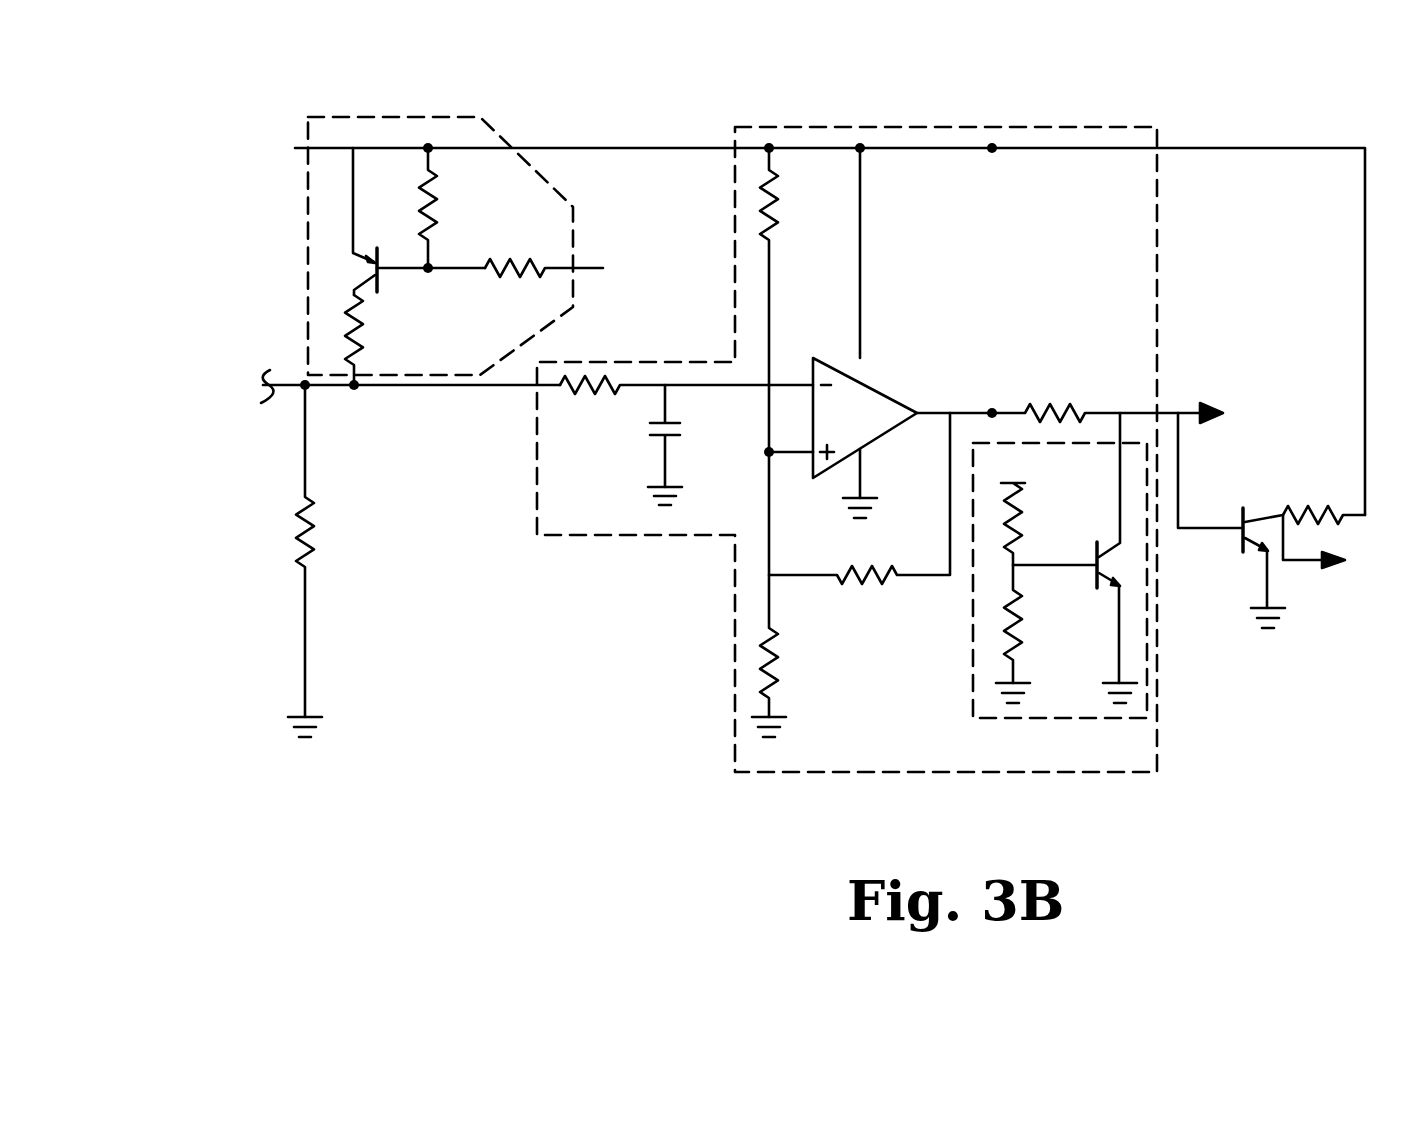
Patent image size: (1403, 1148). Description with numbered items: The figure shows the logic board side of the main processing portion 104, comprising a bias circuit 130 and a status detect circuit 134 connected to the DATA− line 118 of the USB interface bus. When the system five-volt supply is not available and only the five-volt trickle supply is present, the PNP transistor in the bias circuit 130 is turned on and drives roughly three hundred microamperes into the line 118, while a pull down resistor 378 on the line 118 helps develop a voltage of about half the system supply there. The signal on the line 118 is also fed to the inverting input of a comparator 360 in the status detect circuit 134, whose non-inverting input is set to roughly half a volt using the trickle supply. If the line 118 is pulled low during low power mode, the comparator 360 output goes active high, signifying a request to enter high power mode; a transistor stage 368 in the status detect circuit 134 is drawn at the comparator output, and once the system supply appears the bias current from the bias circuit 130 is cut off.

The main processing portion 104 is at (528, 825).
The bias circuit 130 is at (305, 232).
The DATA− line 118 is at (287, 388).
The pull down resistor 378 is at (330, 518).
The status detect circuit 134 is at (730, 643).
The comparator 360 is at (877, 390).
The transistor output stage 368 is at (1150, 622).